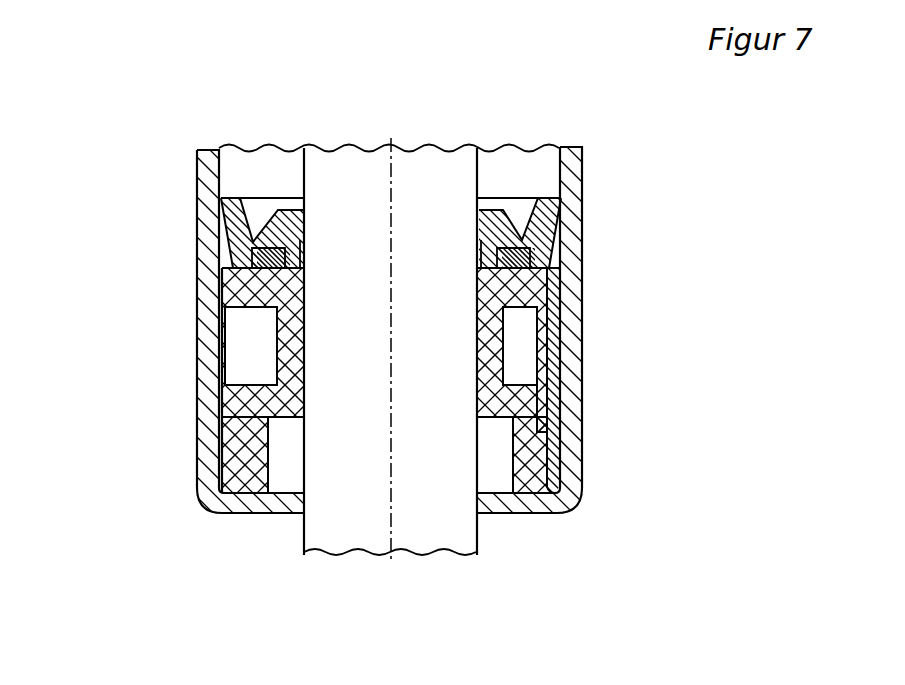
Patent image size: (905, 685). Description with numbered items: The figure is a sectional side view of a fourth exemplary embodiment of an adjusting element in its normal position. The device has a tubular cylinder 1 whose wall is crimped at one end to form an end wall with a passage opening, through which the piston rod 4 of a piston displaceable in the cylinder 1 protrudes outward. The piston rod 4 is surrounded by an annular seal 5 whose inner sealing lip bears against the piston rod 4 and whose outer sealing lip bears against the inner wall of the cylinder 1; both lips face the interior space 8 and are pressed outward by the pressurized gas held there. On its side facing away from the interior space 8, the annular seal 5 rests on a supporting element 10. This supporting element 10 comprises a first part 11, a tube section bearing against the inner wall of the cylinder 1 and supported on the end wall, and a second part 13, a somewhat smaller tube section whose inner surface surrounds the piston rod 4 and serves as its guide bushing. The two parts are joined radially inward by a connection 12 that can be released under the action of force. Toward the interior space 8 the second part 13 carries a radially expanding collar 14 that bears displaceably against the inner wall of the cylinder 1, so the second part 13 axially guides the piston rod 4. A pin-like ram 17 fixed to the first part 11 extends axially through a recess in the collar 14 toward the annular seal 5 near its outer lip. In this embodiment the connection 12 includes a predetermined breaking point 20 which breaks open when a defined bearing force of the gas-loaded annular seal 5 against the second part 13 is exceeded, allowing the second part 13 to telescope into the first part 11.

The cylinder 1 is at (572, 459).
The piston rod 4 is at (428, 515).
The annular seal 5 is at (175, 215).
The interior space 8 is at (245, 178).
The supporting element 10 is at (160, 387).
The first part 11 is at (240, 455).
The connection 12 is at (245, 372).
The second part 13 is at (277, 347).
The collar 14 is at (230, 285).
The ram 17 is at (563, 347).
The predetermined breaking point 20 is at (243, 405).